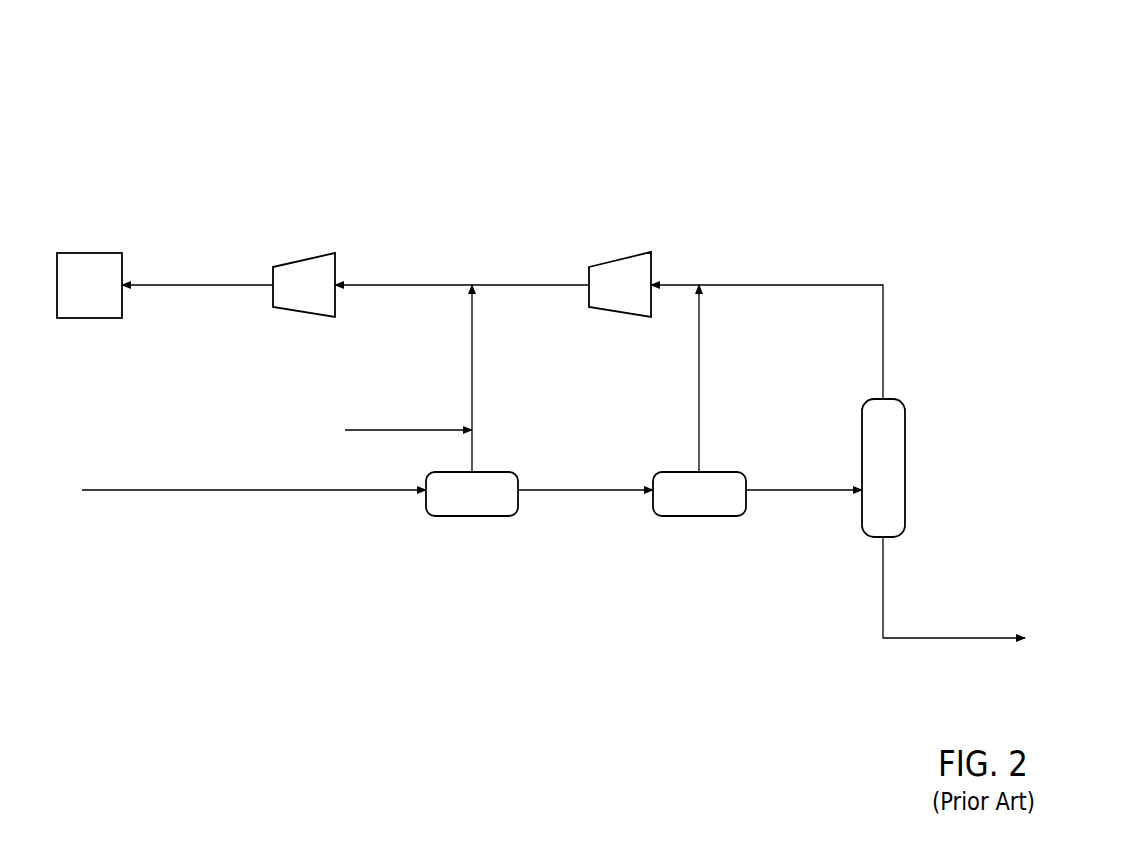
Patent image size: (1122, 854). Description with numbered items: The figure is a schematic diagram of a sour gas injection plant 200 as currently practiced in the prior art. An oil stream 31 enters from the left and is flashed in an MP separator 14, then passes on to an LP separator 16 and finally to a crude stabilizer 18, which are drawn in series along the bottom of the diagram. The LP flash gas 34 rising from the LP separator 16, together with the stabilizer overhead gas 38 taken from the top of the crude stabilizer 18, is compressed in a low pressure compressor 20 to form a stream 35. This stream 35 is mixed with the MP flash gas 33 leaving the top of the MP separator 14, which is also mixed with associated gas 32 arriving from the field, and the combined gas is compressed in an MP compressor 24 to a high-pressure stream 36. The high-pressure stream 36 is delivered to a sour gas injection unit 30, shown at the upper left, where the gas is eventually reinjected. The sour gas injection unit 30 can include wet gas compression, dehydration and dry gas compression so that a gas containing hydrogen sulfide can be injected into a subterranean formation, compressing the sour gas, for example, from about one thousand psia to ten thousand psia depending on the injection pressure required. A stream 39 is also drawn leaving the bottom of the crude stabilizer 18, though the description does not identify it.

The prior art process system 200 is at (285, 66).
The unit 30 is at (89, 285).
The expander/turbine 24 is at (304, 285).
The expander/turbine 20 is at (620, 284).
The unit 14 is at (472, 494).
The unit 16 is at (699, 494).
The separator column 18 is at (883, 468).
The stream 36 is at (191, 283).
The stream 35 is at (531, 283).
The stream 33 is at (471, 404).
The stream 32 is at (393, 431).
The feed stream 31 is at (241, 491).
The stream 34 is at (699, 404).
The overhead stream 38 is at (884, 303).
The bottoms stream 39 is at (967, 594).